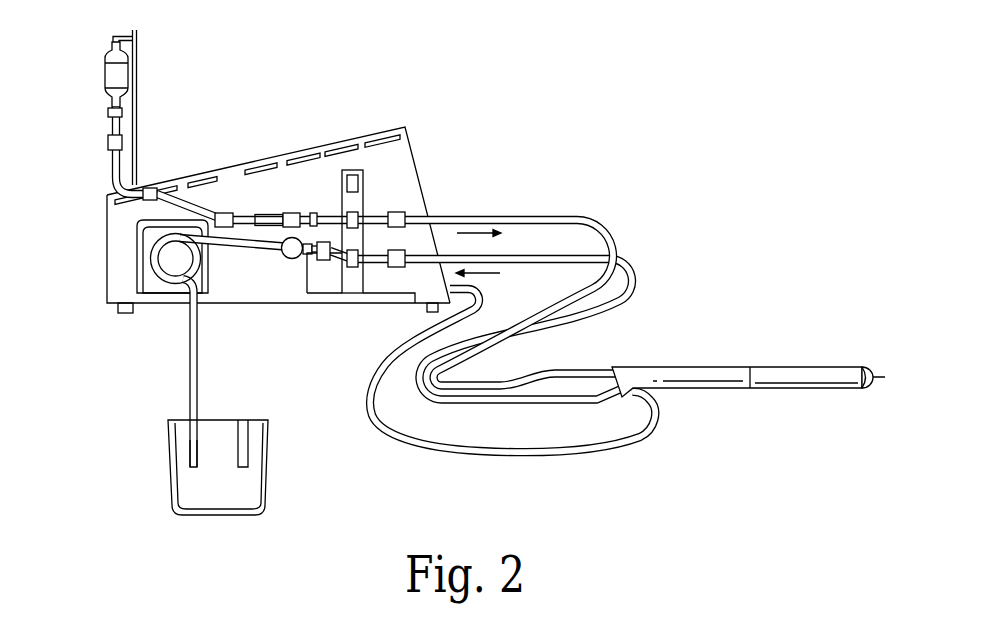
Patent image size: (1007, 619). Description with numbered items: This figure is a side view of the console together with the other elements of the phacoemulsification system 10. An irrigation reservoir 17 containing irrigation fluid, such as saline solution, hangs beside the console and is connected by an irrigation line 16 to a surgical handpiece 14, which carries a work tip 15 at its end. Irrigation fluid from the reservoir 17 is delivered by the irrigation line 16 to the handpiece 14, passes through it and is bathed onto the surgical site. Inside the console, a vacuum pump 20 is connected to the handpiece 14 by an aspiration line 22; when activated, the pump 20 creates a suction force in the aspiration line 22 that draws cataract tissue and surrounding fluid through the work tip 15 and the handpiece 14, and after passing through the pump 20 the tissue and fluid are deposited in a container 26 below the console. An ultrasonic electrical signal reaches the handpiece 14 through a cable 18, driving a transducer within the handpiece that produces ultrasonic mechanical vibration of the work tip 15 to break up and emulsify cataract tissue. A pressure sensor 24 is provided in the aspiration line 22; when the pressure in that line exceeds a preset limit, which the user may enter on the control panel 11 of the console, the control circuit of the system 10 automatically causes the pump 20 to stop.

The phacoemulsification system 10 is at (368, 98).
The control panel 11 is at (415, 155).
The surgical handpiece 14 is at (775, 367).
The work tip 15 is at (878, 375).
The irrigation line 16 is at (598, 215).
The irrigation reservoir 17 is at (108, 72).
The cable 18 is at (393, 432).
The vacuum pump 20 is at (152, 298).
The aspiration line 22 is at (640, 278).
The pressure sensor 24 is at (327, 277).
The container 26 is at (172, 470).